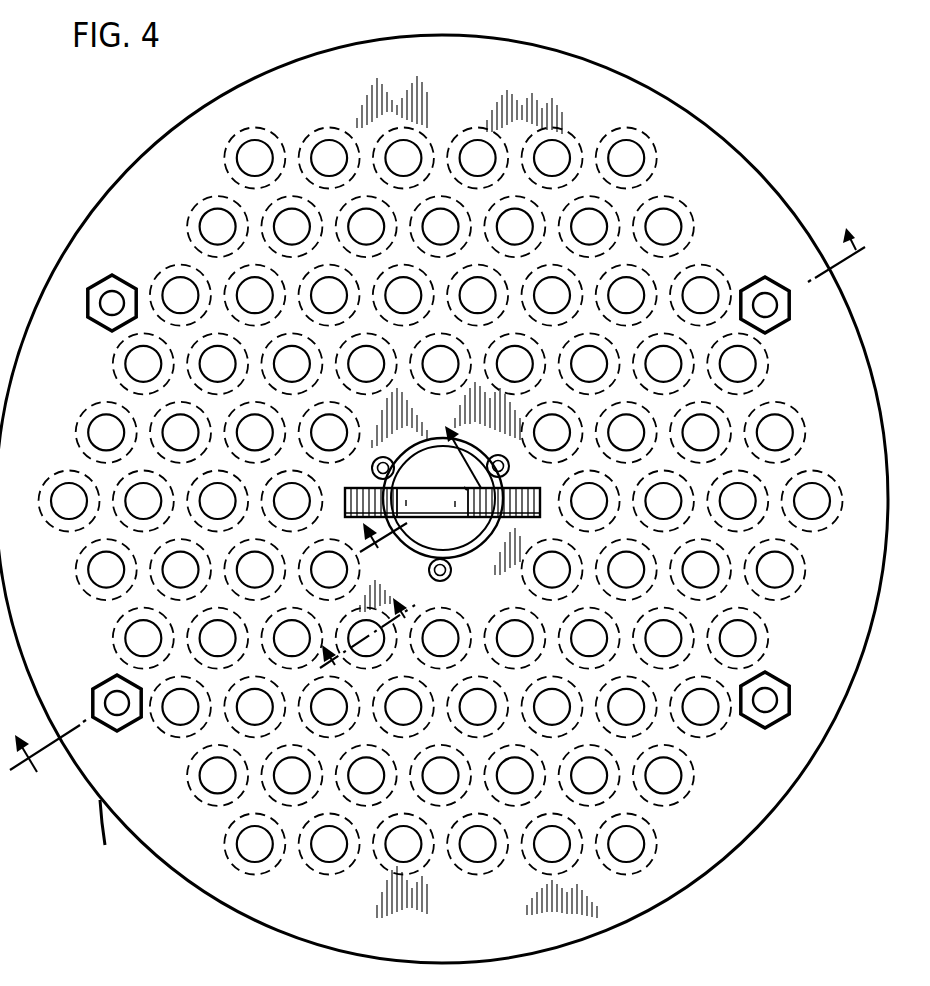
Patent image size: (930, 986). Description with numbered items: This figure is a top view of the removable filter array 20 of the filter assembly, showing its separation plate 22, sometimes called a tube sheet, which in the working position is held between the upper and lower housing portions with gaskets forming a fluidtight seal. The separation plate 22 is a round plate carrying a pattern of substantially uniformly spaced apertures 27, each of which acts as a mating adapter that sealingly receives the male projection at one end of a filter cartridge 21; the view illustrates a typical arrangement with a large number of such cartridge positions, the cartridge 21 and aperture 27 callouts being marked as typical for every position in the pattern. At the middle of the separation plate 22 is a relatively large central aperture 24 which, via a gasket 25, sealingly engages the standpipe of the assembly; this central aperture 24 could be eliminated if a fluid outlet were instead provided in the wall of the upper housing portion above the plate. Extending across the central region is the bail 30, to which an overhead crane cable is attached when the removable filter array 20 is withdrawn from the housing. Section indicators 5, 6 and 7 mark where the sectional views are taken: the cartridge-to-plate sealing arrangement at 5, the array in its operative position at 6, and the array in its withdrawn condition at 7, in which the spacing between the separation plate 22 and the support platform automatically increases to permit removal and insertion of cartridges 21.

The removable filter array 20 is at (768, 830).
The filter cartridges 21 is at (246, 875).
The separation plate 22 is at (137, 818).
The central aperture 24 is at (443, 498).
The gasket 25 is at (466, 549).
The apertures 27 is at (263, 846).
The bail 30 is at (350, 488).
The section line 5- 5 is at (363, 644).
The section line 6- 6 is at (208, 662).
The section line 7- 7 is at (647, 346).